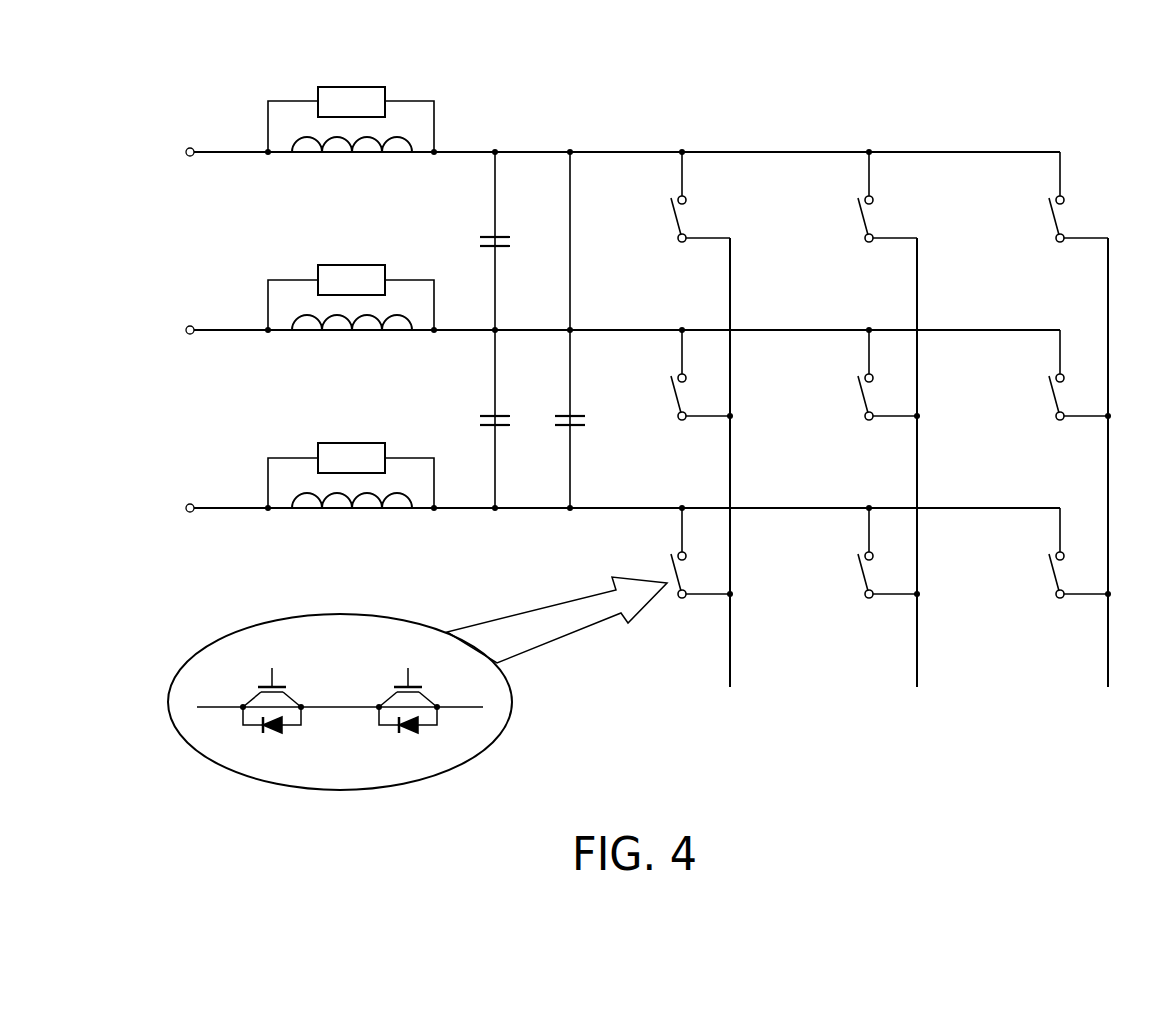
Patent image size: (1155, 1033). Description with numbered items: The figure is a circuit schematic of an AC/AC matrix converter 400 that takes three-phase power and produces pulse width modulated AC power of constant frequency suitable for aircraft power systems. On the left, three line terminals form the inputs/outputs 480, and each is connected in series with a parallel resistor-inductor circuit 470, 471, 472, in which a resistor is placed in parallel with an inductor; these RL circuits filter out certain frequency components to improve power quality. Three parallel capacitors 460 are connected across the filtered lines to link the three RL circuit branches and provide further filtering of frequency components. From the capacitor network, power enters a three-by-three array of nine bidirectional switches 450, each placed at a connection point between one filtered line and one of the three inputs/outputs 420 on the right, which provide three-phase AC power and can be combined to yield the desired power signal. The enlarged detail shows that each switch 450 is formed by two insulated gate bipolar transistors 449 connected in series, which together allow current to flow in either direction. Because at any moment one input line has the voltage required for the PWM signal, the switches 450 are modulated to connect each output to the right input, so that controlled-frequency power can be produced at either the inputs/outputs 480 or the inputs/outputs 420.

The AC/AC matrix converter 400 is at (863, 56).
The inputs/outputs 420 is at (730, 724).
The insulated gate bipolar transistors 449 is at (196, 656).
The bidirectional switches 450 is at (670, 207).
The parallel capacitors 460 is at (488, 235).
The parallel resistor-inductor circuit 470 is at (354, 72).
The parallel resistor-inductor circuit 471 is at (354, 247).
The parallel resistor-inductor circuit 472 is at (354, 427).
The inputs/outputs 480 is at (192, 158).